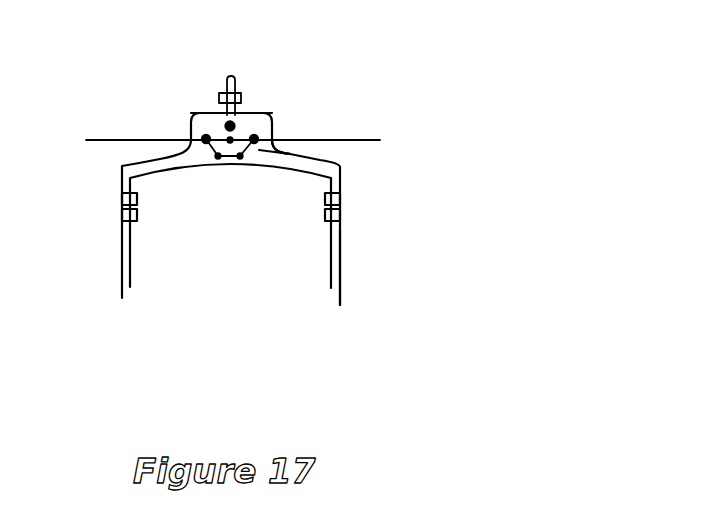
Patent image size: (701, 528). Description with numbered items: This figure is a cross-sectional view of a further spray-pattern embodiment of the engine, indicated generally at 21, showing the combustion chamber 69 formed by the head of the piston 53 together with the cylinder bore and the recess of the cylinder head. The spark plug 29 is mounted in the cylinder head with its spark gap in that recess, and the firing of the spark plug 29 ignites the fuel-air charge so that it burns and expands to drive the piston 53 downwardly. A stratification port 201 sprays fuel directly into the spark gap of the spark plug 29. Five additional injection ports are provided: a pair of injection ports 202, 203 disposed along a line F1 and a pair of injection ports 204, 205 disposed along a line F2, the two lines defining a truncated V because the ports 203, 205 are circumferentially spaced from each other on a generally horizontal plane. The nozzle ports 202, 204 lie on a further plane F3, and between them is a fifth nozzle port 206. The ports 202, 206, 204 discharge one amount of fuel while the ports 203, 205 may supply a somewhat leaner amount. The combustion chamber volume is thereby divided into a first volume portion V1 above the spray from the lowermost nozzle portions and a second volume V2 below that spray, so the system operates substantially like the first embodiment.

The rail assembly 21 is at (390, 47).
The spark plug 29 is at (236, 79).
The piston 53 is at (330, 259).
The combustion chamber 69 is at (292, 153).
The stratification port 201 is at (228, 125).
The injection port 202 is at (206, 139).
The injection port 203 is at (218, 159).
The injection port 204 is at (256, 138).
The injection port 205 is at (240, 159).
The fifth nozzle port 206 is at (230, 143).
The line F1 is at (206, 139).
The line F2 is at (254, 139).
The plane F3 is at (394, 141).
The first volume portion V1 is at (248, 121).
The second volume V2 is at (178, 167).